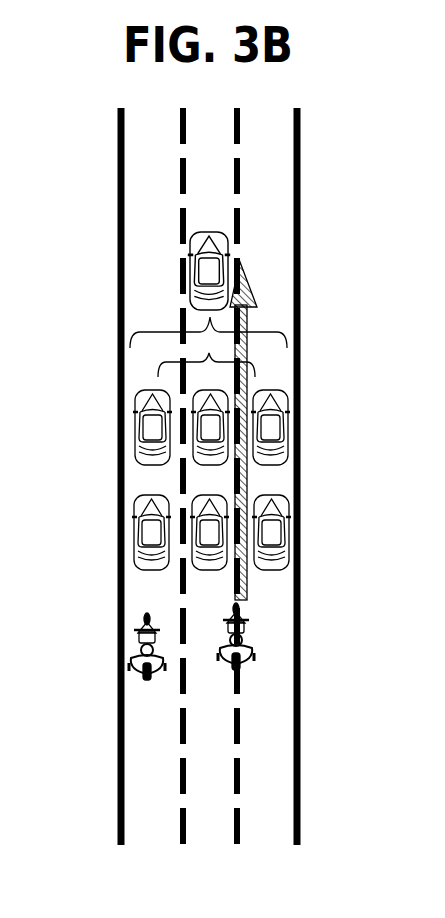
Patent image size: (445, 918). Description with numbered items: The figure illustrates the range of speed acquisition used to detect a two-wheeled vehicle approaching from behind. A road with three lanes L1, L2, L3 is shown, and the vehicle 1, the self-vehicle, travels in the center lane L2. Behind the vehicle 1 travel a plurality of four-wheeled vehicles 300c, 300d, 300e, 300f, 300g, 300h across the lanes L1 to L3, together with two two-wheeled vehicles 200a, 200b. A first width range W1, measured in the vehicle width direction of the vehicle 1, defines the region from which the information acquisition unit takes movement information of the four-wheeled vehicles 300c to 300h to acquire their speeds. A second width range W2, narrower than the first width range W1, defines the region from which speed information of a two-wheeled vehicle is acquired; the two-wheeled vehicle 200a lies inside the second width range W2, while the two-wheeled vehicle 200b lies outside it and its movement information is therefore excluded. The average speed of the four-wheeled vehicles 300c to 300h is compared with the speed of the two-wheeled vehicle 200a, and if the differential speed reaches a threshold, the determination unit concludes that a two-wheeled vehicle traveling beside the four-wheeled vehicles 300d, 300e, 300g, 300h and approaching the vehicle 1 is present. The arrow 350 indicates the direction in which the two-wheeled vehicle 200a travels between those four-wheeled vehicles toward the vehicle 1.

The vehicle 1 is at (190, 250).
The arrow 350 is at (250, 293).
The first width range W1 is at (152, 330).
The second width range W2 is at (163, 365).
The four-wheeled vehicle 300c is at (136, 408).
The four-wheeled vehicle 300d is at (228, 397).
The four-wheeled vehicle 300e is at (288, 434).
The four-wheeled vehicle 300f is at (134, 530).
The four-wheeled vehicle 300g is at (228, 566).
The four-wheeled vehicle 300h is at (290, 543).
The two-wheeled vehicle 200a is at (247, 645).
The two-wheeled vehicle 200b is at (134, 675).
The lane L1 is at (150, 815).
The center lane L2 is at (208, 815).
The lane L3 is at (265, 815).